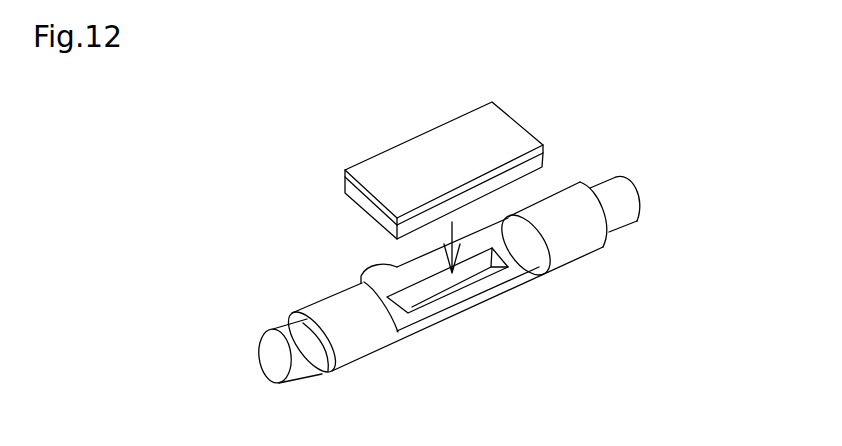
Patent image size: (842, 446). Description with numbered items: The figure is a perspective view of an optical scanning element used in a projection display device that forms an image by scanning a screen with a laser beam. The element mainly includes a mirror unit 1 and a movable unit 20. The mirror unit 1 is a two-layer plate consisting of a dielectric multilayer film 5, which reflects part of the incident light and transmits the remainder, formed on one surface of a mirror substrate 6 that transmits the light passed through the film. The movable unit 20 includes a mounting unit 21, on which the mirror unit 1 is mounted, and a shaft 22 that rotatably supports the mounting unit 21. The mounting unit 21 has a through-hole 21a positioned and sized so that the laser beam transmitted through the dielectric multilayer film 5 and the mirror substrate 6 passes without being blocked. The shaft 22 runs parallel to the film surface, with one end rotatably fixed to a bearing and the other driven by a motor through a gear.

The mirror unit 1 is at (438, 164).
The dielectric multilayer film 5 is at (415, 155).
The mirror substrate 6 is at (344, 196).
The movable unit 20 is at (589, 241).
The mounting unit 21 is at (408, 288).
The through-hole 21a is at (522, 324).
The shaft 22 is at (289, 352).